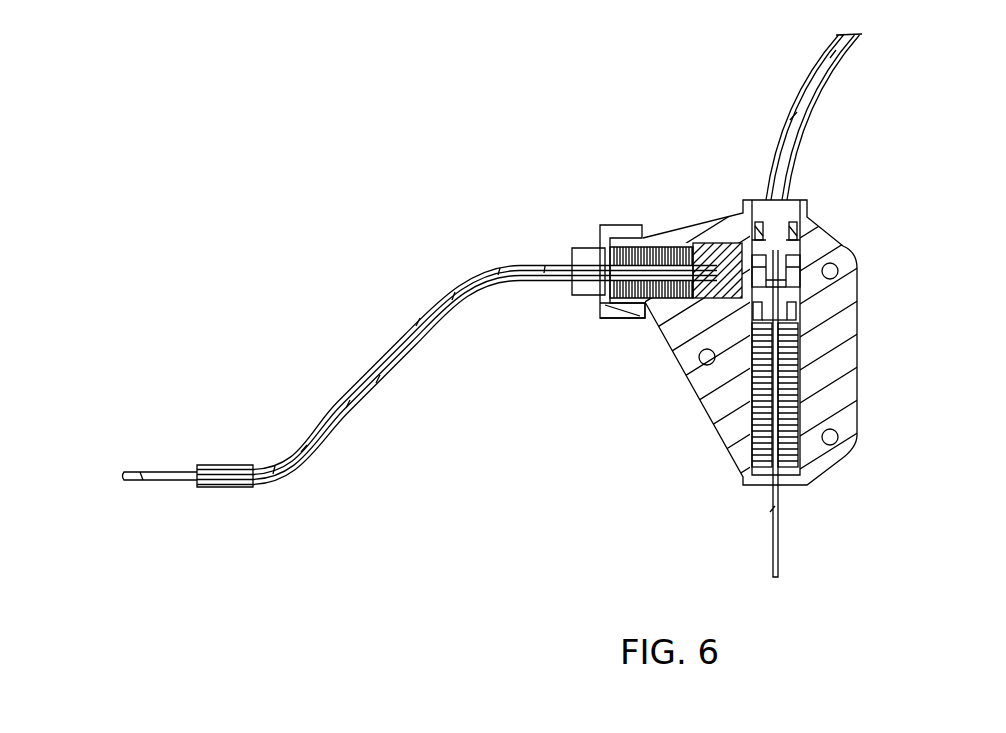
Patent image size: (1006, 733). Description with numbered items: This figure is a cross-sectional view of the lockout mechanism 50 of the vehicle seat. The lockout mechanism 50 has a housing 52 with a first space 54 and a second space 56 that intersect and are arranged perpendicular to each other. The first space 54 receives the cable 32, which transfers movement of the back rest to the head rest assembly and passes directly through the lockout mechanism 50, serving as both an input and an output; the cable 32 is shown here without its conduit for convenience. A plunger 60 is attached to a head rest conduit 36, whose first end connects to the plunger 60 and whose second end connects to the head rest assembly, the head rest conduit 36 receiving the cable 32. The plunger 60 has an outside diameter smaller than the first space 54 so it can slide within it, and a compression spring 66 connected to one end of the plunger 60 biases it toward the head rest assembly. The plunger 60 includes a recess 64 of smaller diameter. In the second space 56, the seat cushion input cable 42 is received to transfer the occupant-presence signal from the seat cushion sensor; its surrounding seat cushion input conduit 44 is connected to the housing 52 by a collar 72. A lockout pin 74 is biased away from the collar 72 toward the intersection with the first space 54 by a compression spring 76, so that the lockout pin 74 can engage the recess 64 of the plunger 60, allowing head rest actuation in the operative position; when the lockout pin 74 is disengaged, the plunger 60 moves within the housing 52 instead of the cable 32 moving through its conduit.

The cable 32 is at (777, 538).
The head rest conduit 36 is at (836, 68).
The seat cushion input cable 42 is at (148, 478).
The seat cushion input conduit 44 is at (498, 265).
The lockout mechanism 50 is at (881, 177).
The housing 52 is at (843, 321).
The first space 54 is at (808, 242).
The second space 56 is at (722, 252).
The plunger 60 is at (800, 290).
The recess 64 is at (797, 265).
The compression spring 66 is at (797, 383).
The collar 72 is at (617, 226).
The lockout pin 74 is at (672, 340).
The compression spring 76 is at (641, 318).